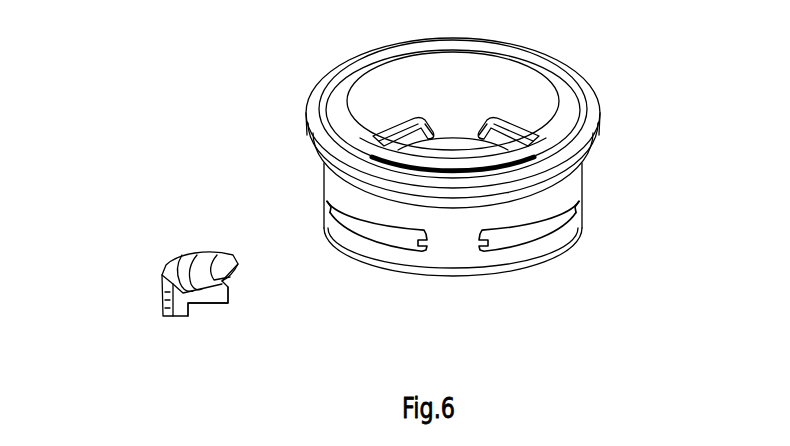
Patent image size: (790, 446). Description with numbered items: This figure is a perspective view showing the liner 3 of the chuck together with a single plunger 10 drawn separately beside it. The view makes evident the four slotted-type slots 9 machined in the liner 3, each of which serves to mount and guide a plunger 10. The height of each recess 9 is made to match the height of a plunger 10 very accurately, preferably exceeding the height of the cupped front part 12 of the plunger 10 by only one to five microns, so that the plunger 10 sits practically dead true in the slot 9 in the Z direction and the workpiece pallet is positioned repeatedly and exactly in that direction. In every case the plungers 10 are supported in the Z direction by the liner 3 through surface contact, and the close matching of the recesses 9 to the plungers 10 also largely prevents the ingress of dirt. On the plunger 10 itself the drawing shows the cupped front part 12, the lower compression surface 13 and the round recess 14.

The liner 3 is at (597, 71).
The slotted-type slot 9 is at (390, 122).
The plunger 10 is at (187, 279).
The cupped front part 12 is at (236, 281).
The lower compression surface 13 is at (221, 318).
The round recess 14 is at (190, 252).